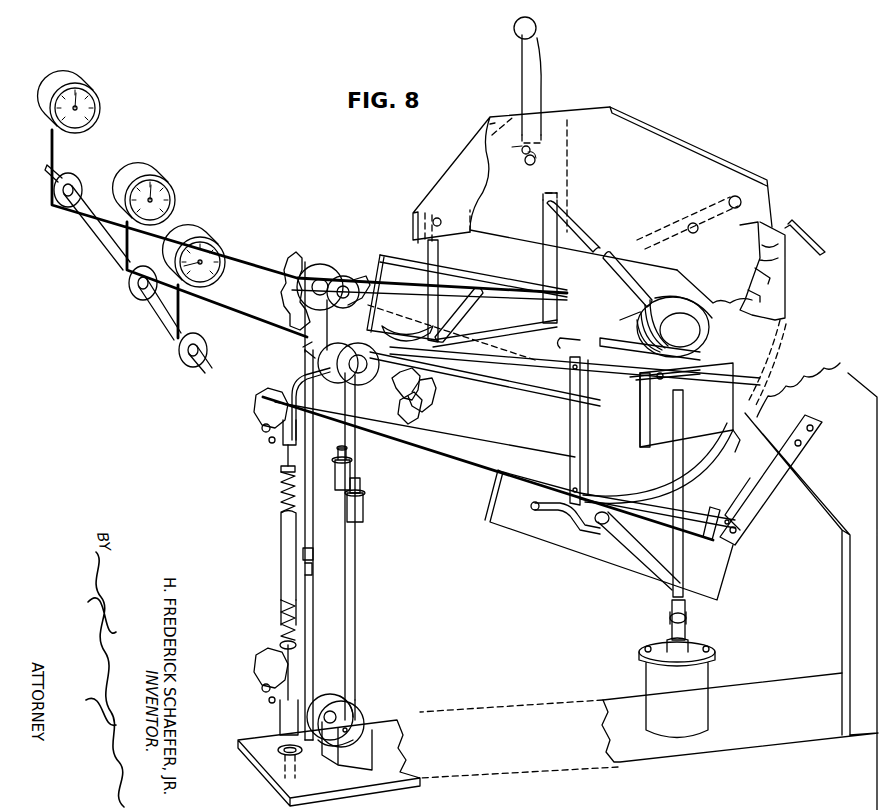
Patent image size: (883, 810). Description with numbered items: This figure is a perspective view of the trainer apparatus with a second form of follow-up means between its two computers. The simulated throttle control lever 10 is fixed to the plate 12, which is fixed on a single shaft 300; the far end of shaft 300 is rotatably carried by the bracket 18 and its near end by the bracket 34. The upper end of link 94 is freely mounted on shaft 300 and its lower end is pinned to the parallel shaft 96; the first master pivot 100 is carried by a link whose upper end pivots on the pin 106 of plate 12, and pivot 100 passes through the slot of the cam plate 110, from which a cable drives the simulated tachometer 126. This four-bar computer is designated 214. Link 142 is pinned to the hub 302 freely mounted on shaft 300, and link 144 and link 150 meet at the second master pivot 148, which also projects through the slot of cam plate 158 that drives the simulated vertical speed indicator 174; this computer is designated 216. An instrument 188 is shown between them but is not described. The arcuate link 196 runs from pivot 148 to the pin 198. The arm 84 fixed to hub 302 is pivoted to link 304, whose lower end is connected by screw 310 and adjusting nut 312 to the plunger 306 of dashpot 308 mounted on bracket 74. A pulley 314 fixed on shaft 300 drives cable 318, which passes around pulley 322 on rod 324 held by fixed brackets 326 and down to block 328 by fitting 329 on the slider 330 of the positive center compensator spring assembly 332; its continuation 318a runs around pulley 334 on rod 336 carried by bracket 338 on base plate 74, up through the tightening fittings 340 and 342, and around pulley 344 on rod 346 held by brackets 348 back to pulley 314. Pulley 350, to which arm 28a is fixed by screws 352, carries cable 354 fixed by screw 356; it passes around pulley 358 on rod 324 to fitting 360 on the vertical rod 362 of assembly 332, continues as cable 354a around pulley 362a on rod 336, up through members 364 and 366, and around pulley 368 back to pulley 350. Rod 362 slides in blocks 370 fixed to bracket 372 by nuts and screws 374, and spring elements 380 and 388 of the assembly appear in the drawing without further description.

The lever 10 is at (535, 50).
The plate 12 is at (458, 170).
The bracket 18 is at (688, 148).
The bracket 34 is at (842, 375).
The base plate 74 is at (788, 732).
The arm 84 is at (712, 420).
The link 94 is at (545, 282).
The shaft 96 is at (700, 482).
The first master pivot 100 is at (406, 259).
The pin 106 is at (440, 220).
The cam plate 110 is at (398, 258).
The simulated tachometer 126 is at (104, 100).
The link 142 is at (700, 438).
The link 144 is at (618, 485).
The second master pivot 148 is at (602, 525).
The link 150 is at (581, 442).
The cam plate 158 is at (555, 542).
The simulated vertical speed indicator 174 is at (232, 230).
The gauge 188 is at (175, 166).
The arcuate link 196 is at (772, 390).
The pin 198 is at (778, 262).
The four-bar computer 214 is at (470, 391).
The four-bar computer 216 is at (550, 508).
The arm 28a is at (648, 345).
The shaft 300 is at (630, 290).
The hub 302 is at (703, 362).
The link 304 is at (742, 558).
The plunger 306 is at (694, 624).
The dashpot 308 is at (710, 668).
The screw 310 is at (672, 606).
The adjusting nut 312 is at (668, 620).
The pulley 314 is at (630, 323).
The cable 318 is at (308, 416).
The cable 318a is at (345, 665).
The pulley 322 is at (330, 268).
The rod 324 is at (308, 258).
The fixed brackets 326 is at (306, 325).
The block 328 is at (326, 546).
The fitting 329 is at (326, 572).
The slider 330 is at (257, 535).
The positive center compensator spring assembly 332 is at (257, 591).
The pulley 334 is at (348, 697).
The rod 336 is at (348, 730).
The bracket 338 is at (400, 758).
The outside fitting 340 is at (334, 478).
The interior fitting 342 is at (352, 458).
The pulley 344 is at (320, 352).
The rod 346 is at (412, 418).
The fixed brackets 348 is at (414, 400).
The pulley 350 is at (705, 324).
The screws 352 is at (680, 330).
The cable 354 is at (358, 446).
The cable 354a is at (356, 636).
The screw 356 is at (655, 372).
The pulley 358 is at (345, 282).
The fitting 360 is at (305, 354).
The rod 362 is at (283, 645).
The pulley 362a is at (358, 712).
The exterior fitting member 364 is at (365, 500).
The interior member 366 is at (362, 484).
The pulley 368 is at (412, 386).
The blocks 370 is at (282, 712).
The fixed bracket 372 is at (280, 660).
The nuts and screws 374 is at (262, 686).
The spring 380 is at (282, 498).
The spring 388 is at (283, 624).